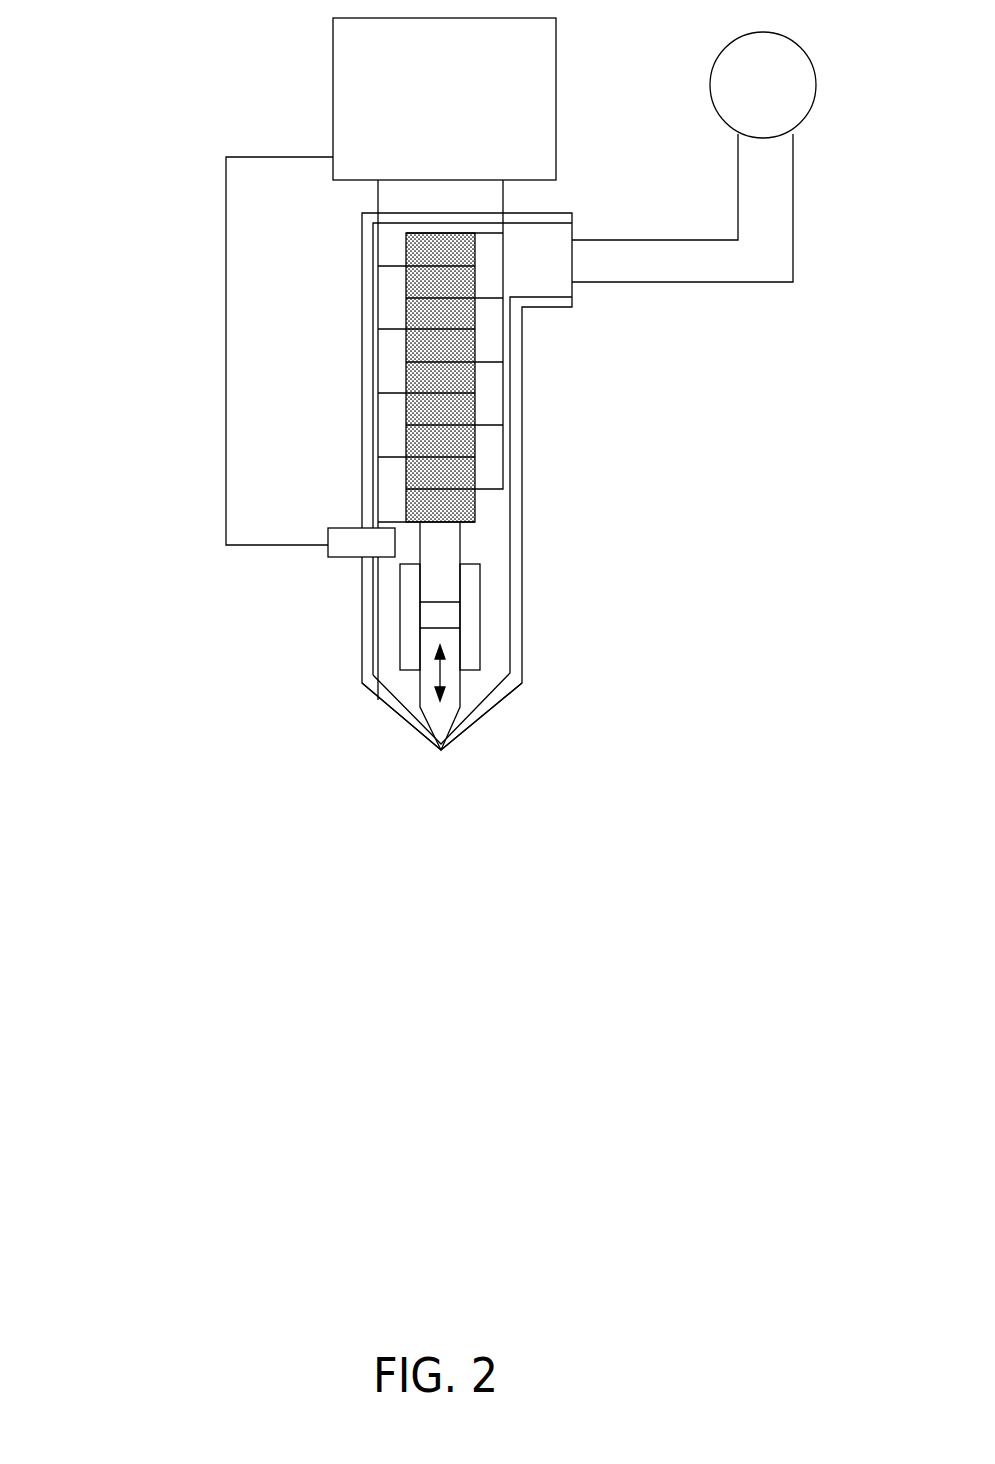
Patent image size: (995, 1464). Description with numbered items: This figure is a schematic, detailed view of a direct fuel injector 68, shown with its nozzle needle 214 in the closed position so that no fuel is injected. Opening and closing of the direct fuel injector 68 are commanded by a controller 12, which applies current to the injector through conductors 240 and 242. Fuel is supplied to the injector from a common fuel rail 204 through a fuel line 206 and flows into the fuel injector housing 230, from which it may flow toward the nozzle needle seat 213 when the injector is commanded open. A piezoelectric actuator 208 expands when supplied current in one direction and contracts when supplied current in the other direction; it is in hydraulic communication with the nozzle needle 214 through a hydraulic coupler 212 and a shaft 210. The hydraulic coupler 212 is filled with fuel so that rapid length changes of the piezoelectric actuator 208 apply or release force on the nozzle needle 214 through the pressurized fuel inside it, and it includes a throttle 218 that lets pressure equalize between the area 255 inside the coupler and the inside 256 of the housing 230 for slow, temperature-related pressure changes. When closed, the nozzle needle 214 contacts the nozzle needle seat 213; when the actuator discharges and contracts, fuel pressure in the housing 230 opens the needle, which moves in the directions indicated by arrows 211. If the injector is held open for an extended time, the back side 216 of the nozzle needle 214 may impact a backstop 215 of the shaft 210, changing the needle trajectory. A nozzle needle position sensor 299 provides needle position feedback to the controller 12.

The controller 12 is at (444, 99).
The direct fuel injector 68 is at (180, 200).
The common fuel rail 204 is at (712, 73).
The fuel line 206 is at (698, 273).
The piezoelectric actuator 208 is at (447, 406).
The shaft 210 is at (447, 545).
The arrows 211 is at (443, 675).
The hydraulic coupler 212 is at (483, 657).
The nozzle needle seat 213 is at (433, 746).
The nozzle needle 214 is at (458, 730).
The backstop 215 is at (440, 604).
The back side of nozzle needle 216 is at (442, 625).
The throttle 218 is at (420, 616).
The fuel injector housing 230 is at (523, 352).
The conductor 240 is at (378, 199).
The conductor 242 is at (503, 188).
The area inside of hydraulic coupler 255 is at (433, 615).
The inside of housing 256 is at (413, 688).
The nozzle needle position sensor 299 is at (363, 548).